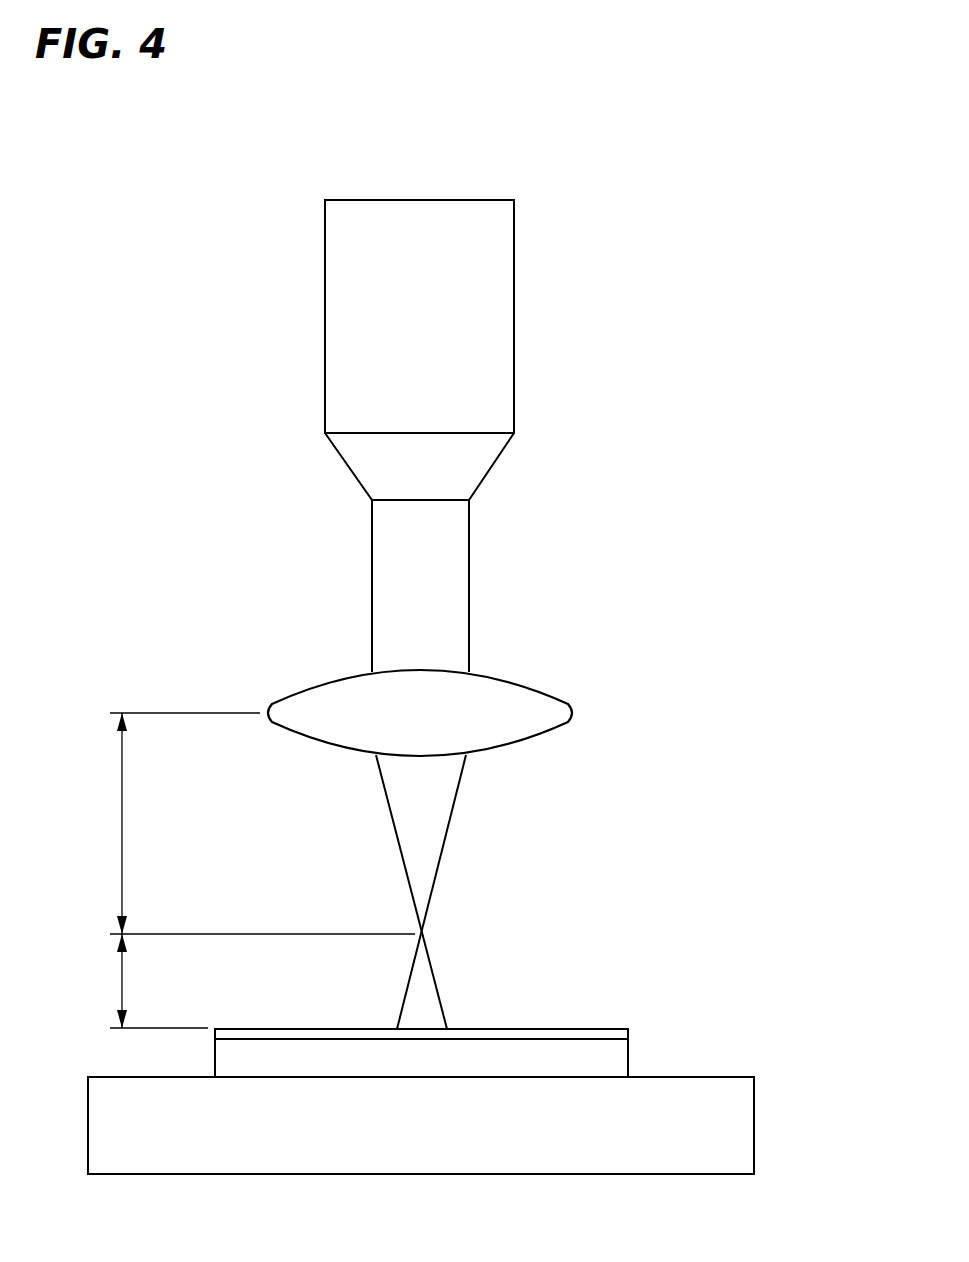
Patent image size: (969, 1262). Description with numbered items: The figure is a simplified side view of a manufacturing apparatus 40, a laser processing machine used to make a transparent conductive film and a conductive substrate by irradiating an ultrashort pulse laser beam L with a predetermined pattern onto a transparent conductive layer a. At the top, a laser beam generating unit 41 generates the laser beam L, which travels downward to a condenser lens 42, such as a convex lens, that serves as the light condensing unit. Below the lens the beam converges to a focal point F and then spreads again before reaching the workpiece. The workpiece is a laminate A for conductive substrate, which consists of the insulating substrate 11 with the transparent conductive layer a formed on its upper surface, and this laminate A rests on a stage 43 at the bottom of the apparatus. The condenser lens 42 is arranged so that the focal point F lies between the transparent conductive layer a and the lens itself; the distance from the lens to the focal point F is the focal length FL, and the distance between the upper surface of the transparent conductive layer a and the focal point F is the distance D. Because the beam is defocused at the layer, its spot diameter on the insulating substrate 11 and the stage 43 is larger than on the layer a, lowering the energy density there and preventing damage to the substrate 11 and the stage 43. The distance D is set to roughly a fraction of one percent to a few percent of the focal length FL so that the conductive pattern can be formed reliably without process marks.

The manufacturing apparatus 40 is at (266, 210).
The laser beam generating unit 41 is at (495, 323).
The laser beam L is at (455, 578).
The condenser lens 42 is at (562, 713).
The focal point F is at (428, 932).
The focal length FL is at (248, 823).
The distance D is at (153, 981).
The laminate for conductive substrate A is at (522, 1024).
The transparent conductive layer a is at (618, 1032).
The insulating substrate 11 is at (618, 1060).
The stage 43 is at (733, 1132).